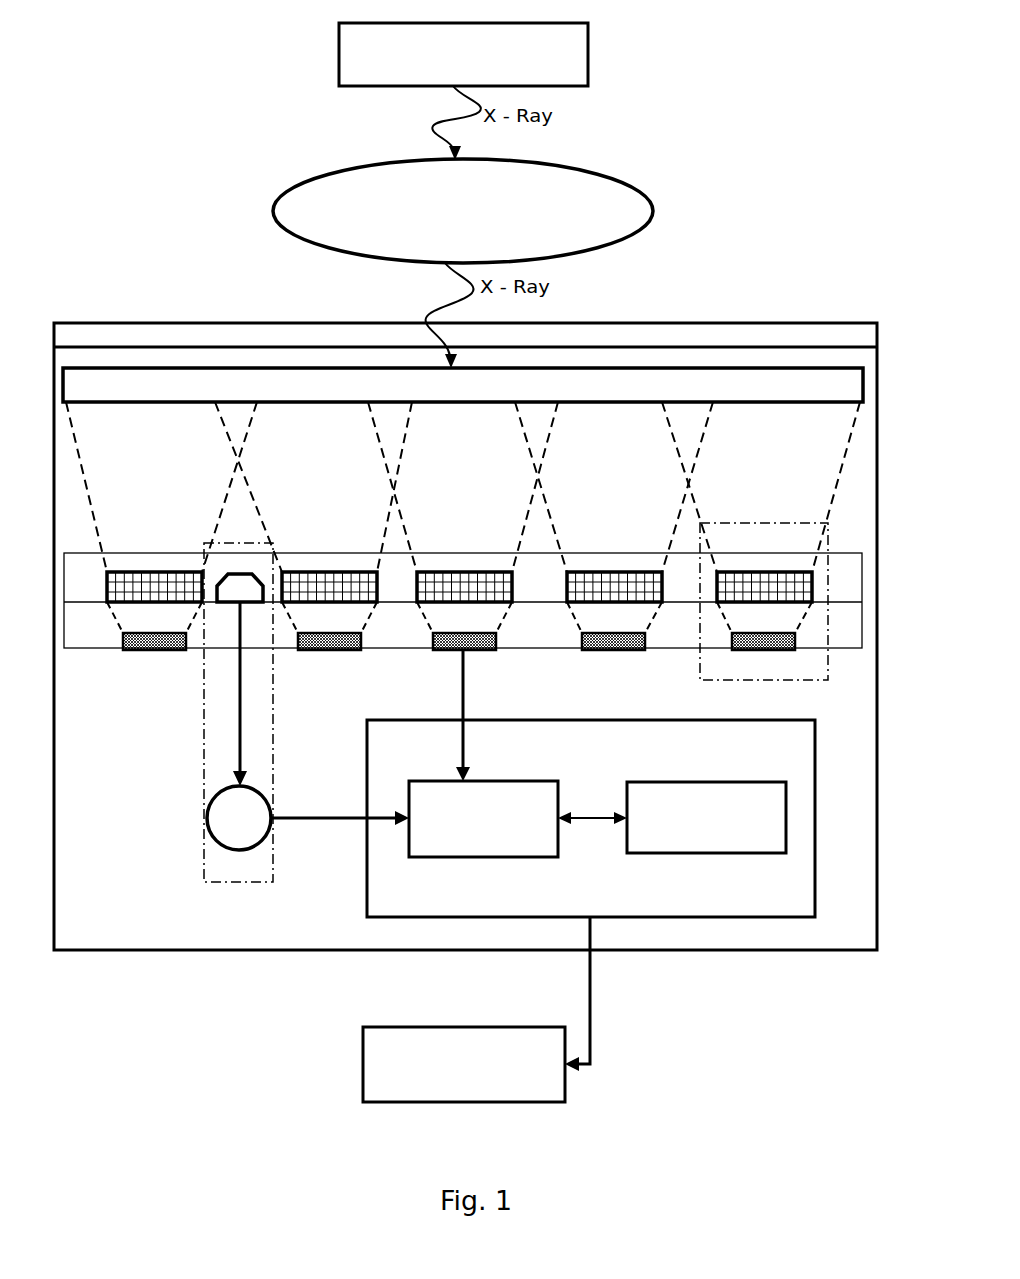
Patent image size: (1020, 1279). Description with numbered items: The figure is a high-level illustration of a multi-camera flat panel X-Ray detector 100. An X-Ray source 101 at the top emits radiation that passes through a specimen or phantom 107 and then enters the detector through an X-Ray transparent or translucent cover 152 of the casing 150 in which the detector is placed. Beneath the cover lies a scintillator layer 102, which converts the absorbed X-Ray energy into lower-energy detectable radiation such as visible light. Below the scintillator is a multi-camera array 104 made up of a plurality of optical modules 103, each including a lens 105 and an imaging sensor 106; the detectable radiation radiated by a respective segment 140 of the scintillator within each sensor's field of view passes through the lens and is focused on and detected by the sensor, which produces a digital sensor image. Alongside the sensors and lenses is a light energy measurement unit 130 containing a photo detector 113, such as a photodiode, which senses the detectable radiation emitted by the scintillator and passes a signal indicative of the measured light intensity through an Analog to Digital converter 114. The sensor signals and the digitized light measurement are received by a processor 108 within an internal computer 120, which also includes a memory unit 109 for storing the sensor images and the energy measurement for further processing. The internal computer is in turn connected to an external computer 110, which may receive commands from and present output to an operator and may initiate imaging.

The multi-camera flat panel X-Ray detector 100 is at (465, 623).
The X-Ray source 101 is at (590, 52).
The scintillator layer 102 is at (723, 383).
The optical module 103 is at (732, 523).
The multi-camera array 104 is at (478, 628).
The lens 105 is at (450, 572).
The imaging sensor 106 is at (328, 650).
The phantom 107 is at (625, 185).
The processor 108 is at (518, 781).
The memory unit 109 is at (710, 782).
The external computer 110 is at (455, 1027).
The photo detector 113 is at (237, 572).
The Analog to Digital converter (A/D) 114 is at (206, 813).
The internal computer 120 is at (548, 720).
The light energy measurement unit 130 is at (203, 728).
The segment of scintillator 140 is at (290, 402).
The casing 150 is at (745, 952).
The cover 152 is at (708, 335).